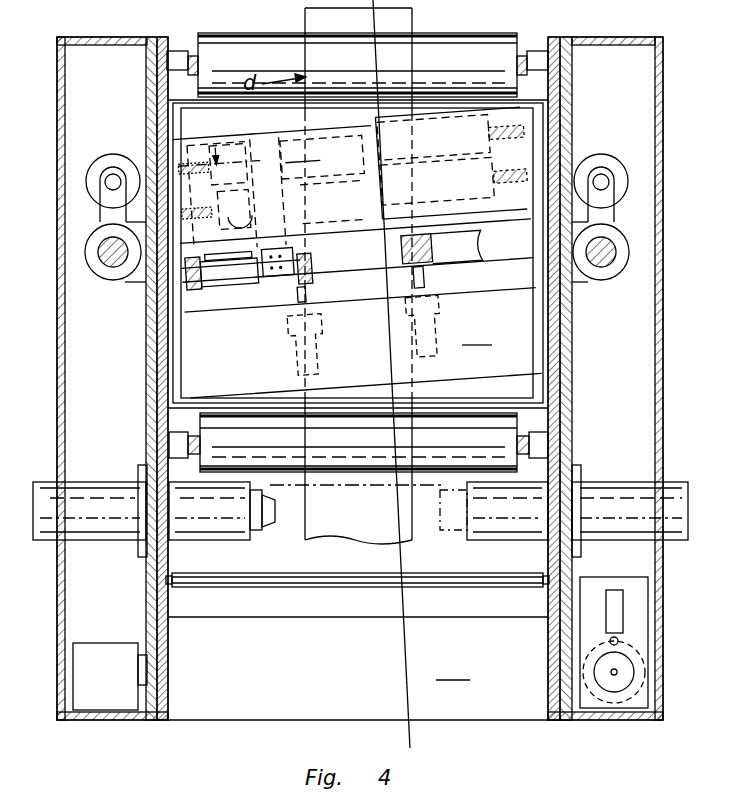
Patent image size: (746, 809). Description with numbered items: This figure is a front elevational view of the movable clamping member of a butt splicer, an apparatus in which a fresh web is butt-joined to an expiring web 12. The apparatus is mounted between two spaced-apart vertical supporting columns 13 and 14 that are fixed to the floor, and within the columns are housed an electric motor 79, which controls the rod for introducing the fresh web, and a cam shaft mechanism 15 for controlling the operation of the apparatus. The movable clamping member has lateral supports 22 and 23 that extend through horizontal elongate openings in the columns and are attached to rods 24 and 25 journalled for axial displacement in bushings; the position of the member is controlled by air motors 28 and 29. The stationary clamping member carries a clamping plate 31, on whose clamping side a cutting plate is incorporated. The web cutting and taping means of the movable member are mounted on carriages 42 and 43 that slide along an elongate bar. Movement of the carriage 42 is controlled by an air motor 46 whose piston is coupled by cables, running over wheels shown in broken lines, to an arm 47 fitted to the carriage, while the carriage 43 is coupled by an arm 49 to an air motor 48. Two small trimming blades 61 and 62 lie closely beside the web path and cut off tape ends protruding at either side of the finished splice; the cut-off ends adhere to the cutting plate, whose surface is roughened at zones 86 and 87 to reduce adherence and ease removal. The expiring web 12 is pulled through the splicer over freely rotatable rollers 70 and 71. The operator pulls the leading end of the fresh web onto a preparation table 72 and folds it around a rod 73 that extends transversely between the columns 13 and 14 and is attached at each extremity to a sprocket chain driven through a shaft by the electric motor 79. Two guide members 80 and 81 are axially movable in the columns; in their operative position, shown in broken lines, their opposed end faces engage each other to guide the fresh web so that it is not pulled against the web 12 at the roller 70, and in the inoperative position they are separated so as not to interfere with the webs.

The expiring web 12 is at (404, 20).
The vertical supporting column 13 is at (112, 40).
The vertical supporting column 14 is at (614, 40).
The cam shaft mechanism 15 is at (640, 616).
The lateral support 22 is at (139, 281).
The lateral support 23 is at (576, 281).
The rod 24 is at (110, 265).
The rod 25 is at (604, 265).
The air motor 28 is at (110, 164).
The air motor 29 is at (600, 164).
The clamping plate 31 is at (357, 253).
The carriage 42 is at (284, 142).
The carriage 43 is at (205, 141).
The air motor 46 is at (312, 142).
The arm 47 is at (222, 143).
The air motor 48 is at (348, 180).
The arm 49 is at (254, 219).
The trimming blade 61 is at (292, 285).
The trimming blade 62 is at (402, 272).
The roller 70 is at (518, 440).
The roller 71 is at (487, 46).
The preparation table 72 is at (358, 648).
The rod 73 is at (320, 590).
The electric motor 79 is at (105, 660).
The guide member 80 is at (190, 522).
The guide member 81 is at (495, 520).
The roughened zone 86 is at (310, 284).
The roughened zone 87 is at (432, 262).